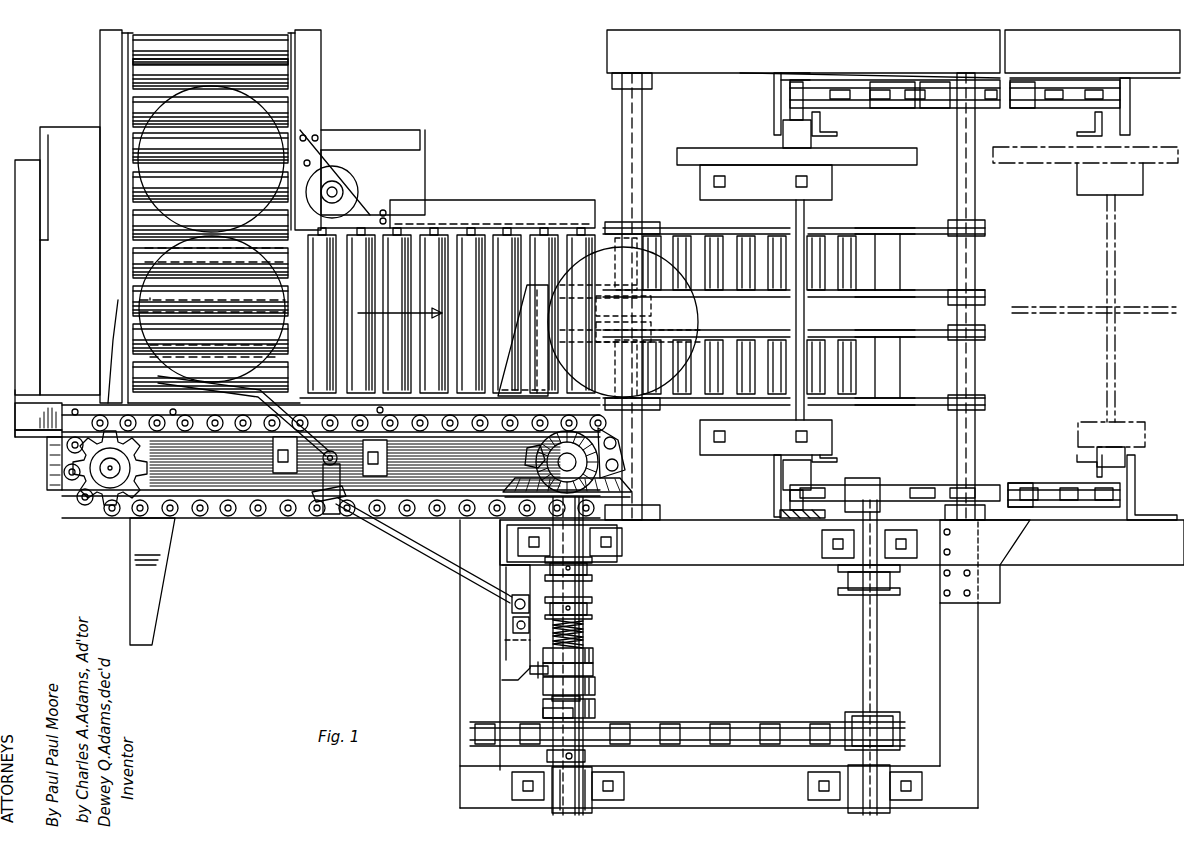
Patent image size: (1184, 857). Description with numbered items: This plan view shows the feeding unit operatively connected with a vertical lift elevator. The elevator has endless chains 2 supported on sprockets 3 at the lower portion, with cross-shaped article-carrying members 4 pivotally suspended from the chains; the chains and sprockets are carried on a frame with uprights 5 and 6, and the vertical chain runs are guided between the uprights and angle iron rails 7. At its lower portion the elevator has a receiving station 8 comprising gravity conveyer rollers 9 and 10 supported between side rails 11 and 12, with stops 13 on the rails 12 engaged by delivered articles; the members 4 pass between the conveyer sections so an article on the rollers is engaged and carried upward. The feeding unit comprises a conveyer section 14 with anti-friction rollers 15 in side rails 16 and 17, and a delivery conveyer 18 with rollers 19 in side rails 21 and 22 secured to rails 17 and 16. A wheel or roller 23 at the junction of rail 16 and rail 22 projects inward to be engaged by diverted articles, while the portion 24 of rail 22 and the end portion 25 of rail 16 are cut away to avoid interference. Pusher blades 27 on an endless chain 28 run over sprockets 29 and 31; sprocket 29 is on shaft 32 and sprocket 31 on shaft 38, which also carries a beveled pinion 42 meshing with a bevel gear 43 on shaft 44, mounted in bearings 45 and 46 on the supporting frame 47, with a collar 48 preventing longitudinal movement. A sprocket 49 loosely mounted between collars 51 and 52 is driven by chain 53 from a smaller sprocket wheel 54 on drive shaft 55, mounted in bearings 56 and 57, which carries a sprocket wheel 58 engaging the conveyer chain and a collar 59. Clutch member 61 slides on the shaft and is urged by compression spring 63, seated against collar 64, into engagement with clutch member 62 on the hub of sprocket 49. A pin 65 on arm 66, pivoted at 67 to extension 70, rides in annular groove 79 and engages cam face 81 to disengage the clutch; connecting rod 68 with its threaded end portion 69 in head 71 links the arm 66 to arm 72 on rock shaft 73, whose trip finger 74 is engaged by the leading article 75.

The endless chain 2 is at (795, 512).
The sprockets 3 is at (912, 97).
The article-carrying members 4 is at (800, 230).
The upright 5 is at (774, 112).
The upright 6 is at (1132, 135).
The angle iron rails 7 is at (838, 135).
The receiving station 8 is at (846, 228).
The gravity conveyer rollers 9 is at (725, 240).
The gravity conveyer rollers 10 is at (853, 240).
The side rails 11 is at (680, 233).
The side rails 12 is at (932, 230).
The stops 13 is at (880, 256).
The conveyer section 14 is at (497, 203).
The anti-friction rollers 15 is at (398, 245).
The side rail 16 is at (470, 212).
The side rail 17 is at (35, 422).
The delivery conveyer 18 is at (325, 78).
The anti-friction rollers 19 is at (290, 103).
The side rail 21 is at (100, 195).
The side rail 22 is at (315, 115).
The wheel or roller 23 is at (345, 165).
The portion of side rail 24 is at (288, 295).
The end portion of side rail 25 is at (290, 250).
The pusher blades 27 is at (118, 300).
The endless chain 28 is at (245, 518).
The sprocket 29 is at (108, 492).
The sprocket 31 is at (528, 455).
The shaft 32 is at (105, 472).
The shaft 38 is at (580, 460).
The beveled pinion 42 is at (600, 468).
The bevel gear 43 is at (600, 497).
The shaft 44 is at (585, 592).
The bearing 45 is at (588, 548).
The bearing 46 is at (595, 778).
The supporting frame 47 is at (462, 648).
The collar 48 is at (592, 577).
The sprocket 49 is at (545, 718).
The collar 51 is at (553, 699).
The collar 52 is at (548, 757).
The chain 53 is at (687, 722).
The sprocket wheel 54 is at (880, 715).
The drive shaft 55 is at (873, 660).
The bearing 56 is at (860, 570).
The bearing 57 is at (855, 775).
The sprocket wheel 58 is at (865, 492).
The collar 59 is at (850, 592).
The clutch member 61 is at (595, 685).
The clutch member 62 is at (595, 708).
The compression spring 63 is at (580, 645).
The collar 64 is at (592, 610).
The pin 65 is at (535, 678).
The arm 66 is at (518, 655).
The pivot 67 is at (512, 626).
The connecting rod 68 is at (418, 560).
The end portion of connecting rod 69 is at (318, 505).
The extension 70 is at (512, 606).
The head 71 is at (336, 518).
The arm 72 is at (330, 520).
The rock shaft 73 is at (337, 458).
The trip finger 74 is at (198, 385).
The leading article 75 is at (150, 312).
The annular groove 79 is at (594, 670).
The cam face 81 is at (594, 658).